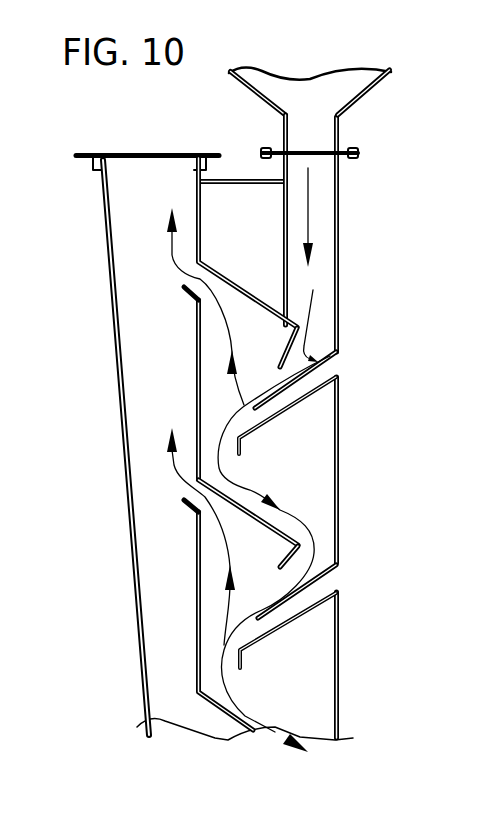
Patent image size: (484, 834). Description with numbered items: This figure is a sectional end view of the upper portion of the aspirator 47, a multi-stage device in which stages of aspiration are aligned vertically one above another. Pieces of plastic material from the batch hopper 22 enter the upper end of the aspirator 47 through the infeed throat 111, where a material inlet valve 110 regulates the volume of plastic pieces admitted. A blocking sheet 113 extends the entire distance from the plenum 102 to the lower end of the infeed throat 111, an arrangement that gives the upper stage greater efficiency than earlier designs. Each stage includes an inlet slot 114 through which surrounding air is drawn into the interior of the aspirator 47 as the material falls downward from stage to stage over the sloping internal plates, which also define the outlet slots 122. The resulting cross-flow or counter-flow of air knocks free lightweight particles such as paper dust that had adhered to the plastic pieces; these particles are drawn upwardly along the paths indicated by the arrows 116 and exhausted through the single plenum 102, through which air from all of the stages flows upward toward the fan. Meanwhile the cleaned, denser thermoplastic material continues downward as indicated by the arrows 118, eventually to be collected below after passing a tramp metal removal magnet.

The batch hopper 22 is at (358, 91).
The aspirator 47 is at (376, 211).
The plenum 102 is at (130, 339).
The material inlet valve 110 is at (308, 338).
The infeed throat 111 is at (317, 167).
The blocking sheet 113 is at (238, 283).
The inlet slot 114 is at (323, 370).
The arrows indicating upward air paths 116 is at (170, 257).
The arrows indicating downward material flow 118 is at (224, 435).
The outlet slot 122 is at (200, 279).